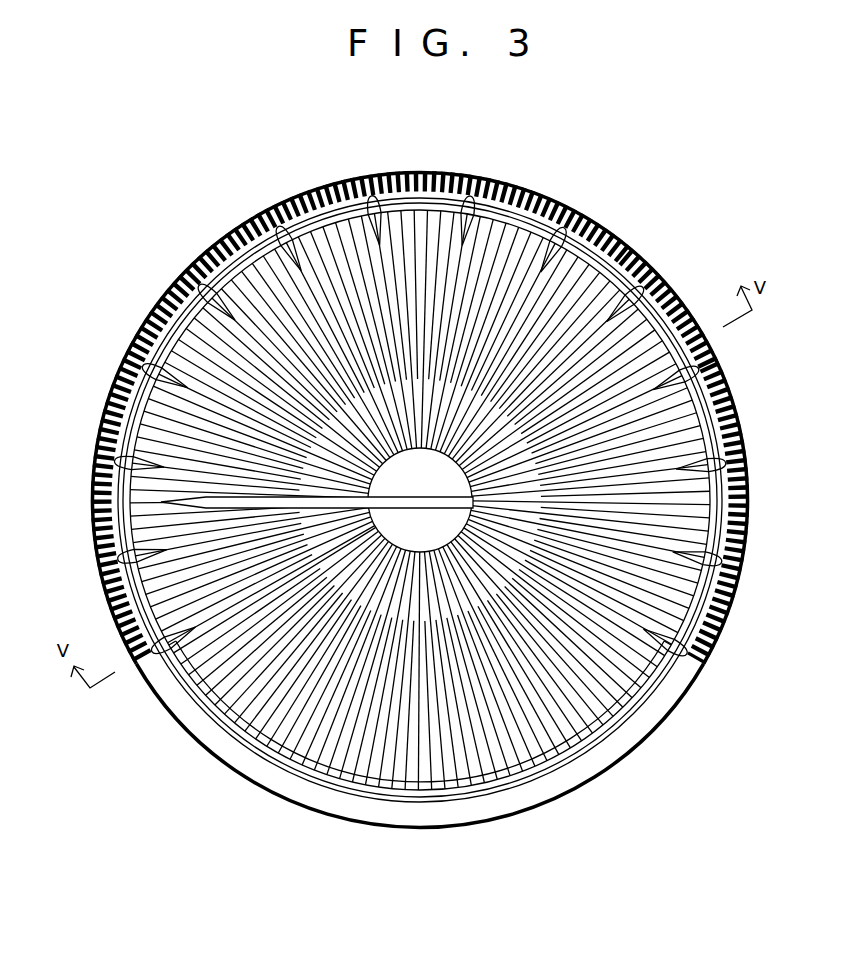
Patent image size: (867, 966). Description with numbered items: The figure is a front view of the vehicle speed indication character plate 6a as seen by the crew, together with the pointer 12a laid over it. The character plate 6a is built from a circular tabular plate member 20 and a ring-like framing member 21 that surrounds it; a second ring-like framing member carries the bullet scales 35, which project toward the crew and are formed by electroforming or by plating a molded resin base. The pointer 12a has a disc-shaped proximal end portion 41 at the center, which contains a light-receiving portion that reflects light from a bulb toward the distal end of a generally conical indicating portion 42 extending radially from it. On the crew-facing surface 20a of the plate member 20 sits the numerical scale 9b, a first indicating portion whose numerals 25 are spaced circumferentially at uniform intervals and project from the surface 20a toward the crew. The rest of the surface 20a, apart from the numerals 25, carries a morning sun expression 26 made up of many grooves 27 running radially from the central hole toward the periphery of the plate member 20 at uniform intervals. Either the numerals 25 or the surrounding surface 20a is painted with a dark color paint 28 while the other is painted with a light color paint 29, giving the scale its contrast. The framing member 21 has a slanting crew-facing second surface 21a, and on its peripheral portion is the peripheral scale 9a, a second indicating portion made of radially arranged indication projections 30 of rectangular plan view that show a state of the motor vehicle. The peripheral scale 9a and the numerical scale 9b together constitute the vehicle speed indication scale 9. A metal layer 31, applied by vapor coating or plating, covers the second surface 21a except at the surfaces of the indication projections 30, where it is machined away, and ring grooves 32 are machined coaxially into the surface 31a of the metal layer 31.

The vehicle speed indication character plate 6a is at (597, 200).
The vehicle speed indication scale 9 is at (680, 845).
The peripheral scale 9a is at (818, 552).
The numerical scale 9b is at (340, 112).
The pointer 12a is at (340, 513).
The plate member 20 is at (483, 787).
The surface of the plate member 20a is at (670, 307).
The framing member 21 is at (680, 712).
The second surface of the framing member 21a is at (677, 682).
The numerals 25 is at (372, 222).
The morning sun expression 26 is at (818, 392).
The grooves 27 is at (722, 400).
The dark color paint 28 is at (288, 262).
The light color paint 29 is at (212, 268).
The indication projections 30 is at (740, 600).
The metal layer 31 is at (523, 793).
The surface of the metal layer 31a is at (551, 778).
The ring grooves 32 is at (640, 718).
The bullet scales 35 is at (720, 360).
The proximal end portion 41 is at (408, 528).
The indicating portion 42 is at (300, 492).